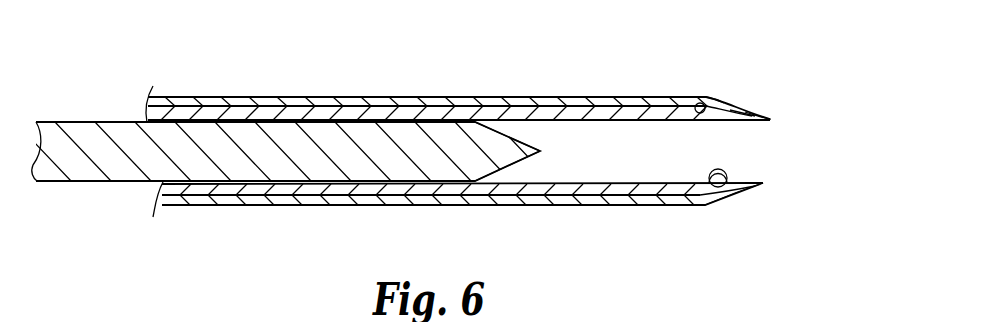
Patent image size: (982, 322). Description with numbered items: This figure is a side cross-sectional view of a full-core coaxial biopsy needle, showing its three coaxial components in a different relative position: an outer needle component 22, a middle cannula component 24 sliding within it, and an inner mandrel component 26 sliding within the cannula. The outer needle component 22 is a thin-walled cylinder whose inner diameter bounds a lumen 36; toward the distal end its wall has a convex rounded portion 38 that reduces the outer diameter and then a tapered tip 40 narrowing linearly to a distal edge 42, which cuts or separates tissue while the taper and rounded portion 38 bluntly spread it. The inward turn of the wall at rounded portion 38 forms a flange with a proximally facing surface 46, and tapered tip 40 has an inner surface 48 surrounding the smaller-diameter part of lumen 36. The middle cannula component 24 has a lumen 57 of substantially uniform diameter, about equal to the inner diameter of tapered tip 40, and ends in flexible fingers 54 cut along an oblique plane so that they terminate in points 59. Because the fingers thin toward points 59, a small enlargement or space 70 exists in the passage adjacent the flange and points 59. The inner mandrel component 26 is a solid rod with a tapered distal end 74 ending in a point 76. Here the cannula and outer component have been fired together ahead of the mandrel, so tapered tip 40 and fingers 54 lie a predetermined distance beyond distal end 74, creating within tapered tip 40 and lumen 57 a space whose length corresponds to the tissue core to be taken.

The outer needle component 22 is at (462, 202).
The middle cannula component 24 is at (371, 115).
The inner mandrel component 26 is at (245, 152).
The lumen 36 is at (718, 148).
The rounded portion 38 is at (712, 207).
The tapered tip 40 is at (742, 104).
The distal edge 42 is at (776, 116).
The surface 46 is at (726, 192).
The inner surface 48 is at (763, 183).
The flexible fingers 54 is at (680, 98).
The lumen 57 is at (582, 153).
The points 59 is at (710, 100).
The enlargement or space 70 is at (712, 103).
The distal end 74 is at (495, 150).
The point 76 is at (540, 152).